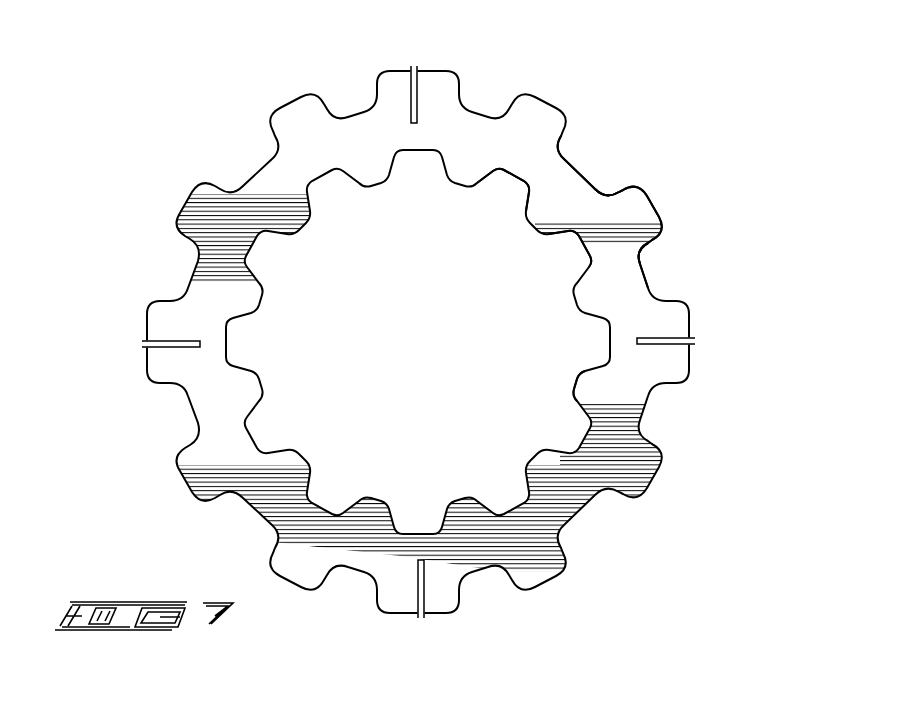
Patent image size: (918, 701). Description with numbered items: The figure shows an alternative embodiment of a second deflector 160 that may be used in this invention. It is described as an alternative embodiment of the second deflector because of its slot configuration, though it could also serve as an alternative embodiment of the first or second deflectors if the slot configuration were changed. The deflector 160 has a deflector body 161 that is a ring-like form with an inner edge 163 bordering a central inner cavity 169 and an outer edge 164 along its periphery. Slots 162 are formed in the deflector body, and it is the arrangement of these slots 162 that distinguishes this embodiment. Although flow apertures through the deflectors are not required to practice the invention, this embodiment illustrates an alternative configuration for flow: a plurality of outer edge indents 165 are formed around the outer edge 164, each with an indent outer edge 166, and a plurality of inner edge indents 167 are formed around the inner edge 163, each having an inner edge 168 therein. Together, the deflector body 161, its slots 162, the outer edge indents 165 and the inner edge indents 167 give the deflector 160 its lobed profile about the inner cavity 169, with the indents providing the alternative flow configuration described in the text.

The second deflector 160 is at (421, 335).
The deflector body 161 is at (523, 133).
The slots 162 is at (418, 66).
The inner edge 163 is at (575, 383).
The outer edge 164 is at (656, 203).
The outer edge indents 165 is at (672, 237).
The outer valley 166 is at (583, 171).
The inner edge indents 167 is at (532, 244).
The inner edge 168 is at (510, 177).
The central opening 169 is at (424, 357).